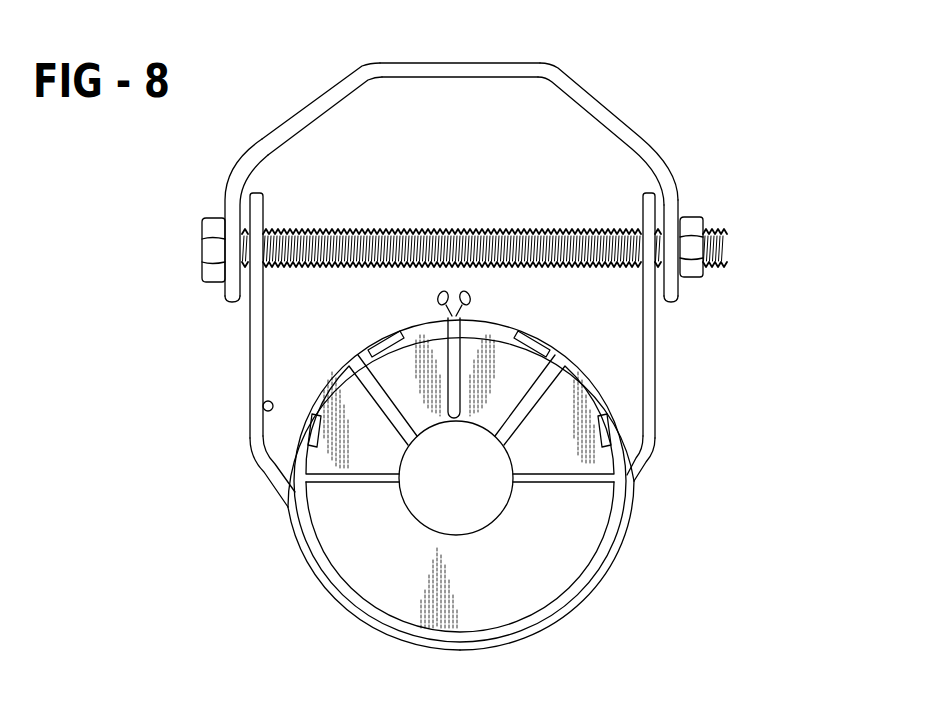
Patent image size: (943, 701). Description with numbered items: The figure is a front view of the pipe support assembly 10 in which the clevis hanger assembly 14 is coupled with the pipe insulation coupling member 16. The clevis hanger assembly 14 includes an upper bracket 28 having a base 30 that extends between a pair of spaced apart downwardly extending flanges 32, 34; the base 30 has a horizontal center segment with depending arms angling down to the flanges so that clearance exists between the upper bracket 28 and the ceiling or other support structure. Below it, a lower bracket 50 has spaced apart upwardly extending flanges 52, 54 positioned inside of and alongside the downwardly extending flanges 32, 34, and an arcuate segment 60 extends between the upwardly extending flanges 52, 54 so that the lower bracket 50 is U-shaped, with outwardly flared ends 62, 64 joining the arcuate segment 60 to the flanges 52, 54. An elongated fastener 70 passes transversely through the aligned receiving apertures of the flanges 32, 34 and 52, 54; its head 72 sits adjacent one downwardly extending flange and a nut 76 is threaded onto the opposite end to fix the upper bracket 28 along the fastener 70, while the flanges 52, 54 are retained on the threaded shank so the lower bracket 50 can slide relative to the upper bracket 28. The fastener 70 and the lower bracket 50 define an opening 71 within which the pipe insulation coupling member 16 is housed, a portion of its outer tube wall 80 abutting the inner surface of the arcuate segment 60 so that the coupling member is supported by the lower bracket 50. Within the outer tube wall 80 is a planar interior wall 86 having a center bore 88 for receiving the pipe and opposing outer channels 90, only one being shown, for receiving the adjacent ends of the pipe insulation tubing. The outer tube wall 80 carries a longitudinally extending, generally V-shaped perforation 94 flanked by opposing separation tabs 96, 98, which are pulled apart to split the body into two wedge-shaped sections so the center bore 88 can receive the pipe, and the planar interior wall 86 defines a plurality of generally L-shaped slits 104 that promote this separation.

The pipe support assembly 10 is at (763, 130).
The clevis hanger assembly 14 is at (350, 68).
The pipe insulation coupling member 16 is at (608, 392).
The upper bracket 28 is at (551, 66).
The base 30 is at (460, 63).
The downwardly extending flange 32 is at (224, 198).
The downwardly extending flange 34 is at (680, 195).
The lower bracket 50 is at (250, 428).
The upwardly extending flange 52 is at (250, 365).
The upwardly extending flange 54 is at (656, 325).
The arcuate segment 60 is at (588, 604).
The outwardly flared end 62 is at (254, 462).
The outwardly flared end 64 is at (647, 458).
The elongated fastener 70 is at (497, 229).
The opening 71 is at (266, 405).
The head 72 is at (202, 254).
The nut 76 is at (690, 277).
The outer tube wall 80 is at (602, 556).
The planar interior wall 86 is at (494, 582).
The center bore 88 is at (412, 508).
The outer channel 90 is at (356, 590).
The perforation 94 is at (468, 320).
The separation tab 96 is at (438, 300).
The separation tab 98 is at (466, 298).
The slits 104 is at (364, 350).